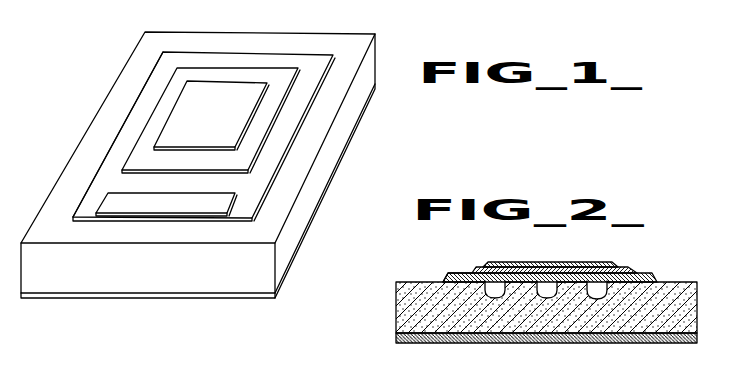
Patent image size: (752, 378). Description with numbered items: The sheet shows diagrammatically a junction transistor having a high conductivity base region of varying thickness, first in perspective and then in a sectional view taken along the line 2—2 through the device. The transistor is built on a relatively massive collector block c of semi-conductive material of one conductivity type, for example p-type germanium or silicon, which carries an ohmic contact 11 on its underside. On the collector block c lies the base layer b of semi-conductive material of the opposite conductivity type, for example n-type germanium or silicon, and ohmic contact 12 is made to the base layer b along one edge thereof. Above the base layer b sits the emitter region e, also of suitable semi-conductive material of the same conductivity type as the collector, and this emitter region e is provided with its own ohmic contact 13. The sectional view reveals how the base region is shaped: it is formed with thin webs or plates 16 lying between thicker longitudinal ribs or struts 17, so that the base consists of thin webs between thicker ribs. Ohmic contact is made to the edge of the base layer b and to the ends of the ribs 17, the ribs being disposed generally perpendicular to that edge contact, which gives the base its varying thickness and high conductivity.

In FIG. 1, the ohmic contact 11 is at (193, 297).
In FIG. 2, the ohmic contact 11 is at (653, 338).
In FIG. 1, the ohmic contact 12 is at (202, 205).
In FIG. 1, the ohmic contact 13 is at (217, 85).
In FIG. 2, the ohmic contact 13 is at (578, 262).
In FIG. 1, the webs or plates 16 is at (100, 175).
In FIG. 2, the webs or plates 16 is at (457, 275).
In FIG. 2, the ribs or struts 17 is at (497, 300).
In FIG. 1, the section line 2— 2 is at (115, 127).
In FIG. 1, the base layer b is at (171, 136).
In FIG. 2, the base layer b is at (561, 262).
In FIG. 1, the collector block c is at (30, 266).
In FIG. 2, the collector block c is at (697, 297).
In FIG. 1, the emitter region e is at (175, 78).
In FIG. 2, the emitter region e is at (623, 267).